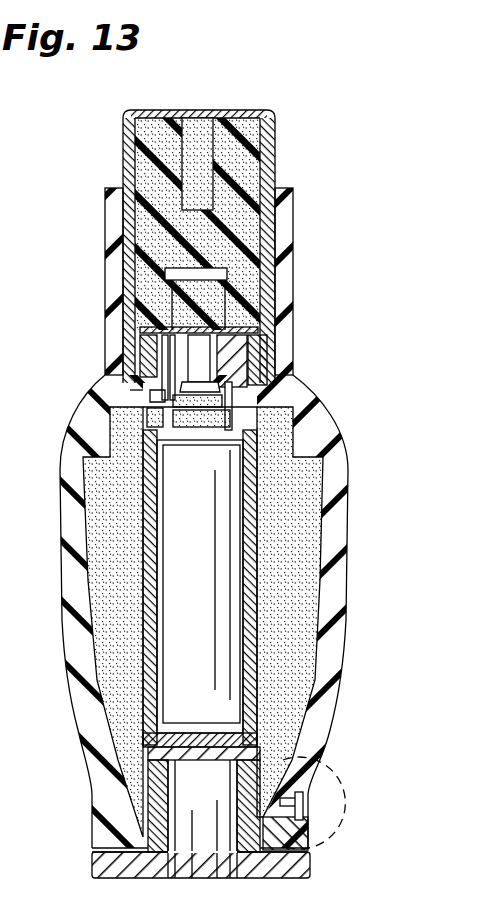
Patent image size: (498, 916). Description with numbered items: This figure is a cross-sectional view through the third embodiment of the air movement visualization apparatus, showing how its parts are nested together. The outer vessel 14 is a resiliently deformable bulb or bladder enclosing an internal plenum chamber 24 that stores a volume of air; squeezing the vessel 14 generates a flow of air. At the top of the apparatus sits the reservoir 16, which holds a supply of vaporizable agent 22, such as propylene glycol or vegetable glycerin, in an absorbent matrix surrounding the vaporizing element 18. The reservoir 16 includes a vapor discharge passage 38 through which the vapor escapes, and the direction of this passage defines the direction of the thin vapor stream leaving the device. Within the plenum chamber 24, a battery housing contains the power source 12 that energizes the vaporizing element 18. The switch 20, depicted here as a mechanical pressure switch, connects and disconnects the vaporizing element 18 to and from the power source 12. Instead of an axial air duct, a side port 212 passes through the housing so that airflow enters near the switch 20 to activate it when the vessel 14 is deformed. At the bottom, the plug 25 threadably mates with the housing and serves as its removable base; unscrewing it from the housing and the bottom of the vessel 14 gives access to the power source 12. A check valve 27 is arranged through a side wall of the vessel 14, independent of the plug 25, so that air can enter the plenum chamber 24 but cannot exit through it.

The power source 12 is at (209, 614).
The vessel 14 is at (60, 540).
The reservoir 16 is at (237, 121).
The vaporizing element 18 is at (122, 233).
The switch 20 is at (203, 427).
The vaporizable agent 22 is at (150, 163).
The plenum chamber 24 is at (298, 569).
The plug 25 is at (270, 868).
The check valve 27 is at (302, 808).
The vapor discharge passage 38 is at (197, 145).
The side port 212 is at (160, 433).